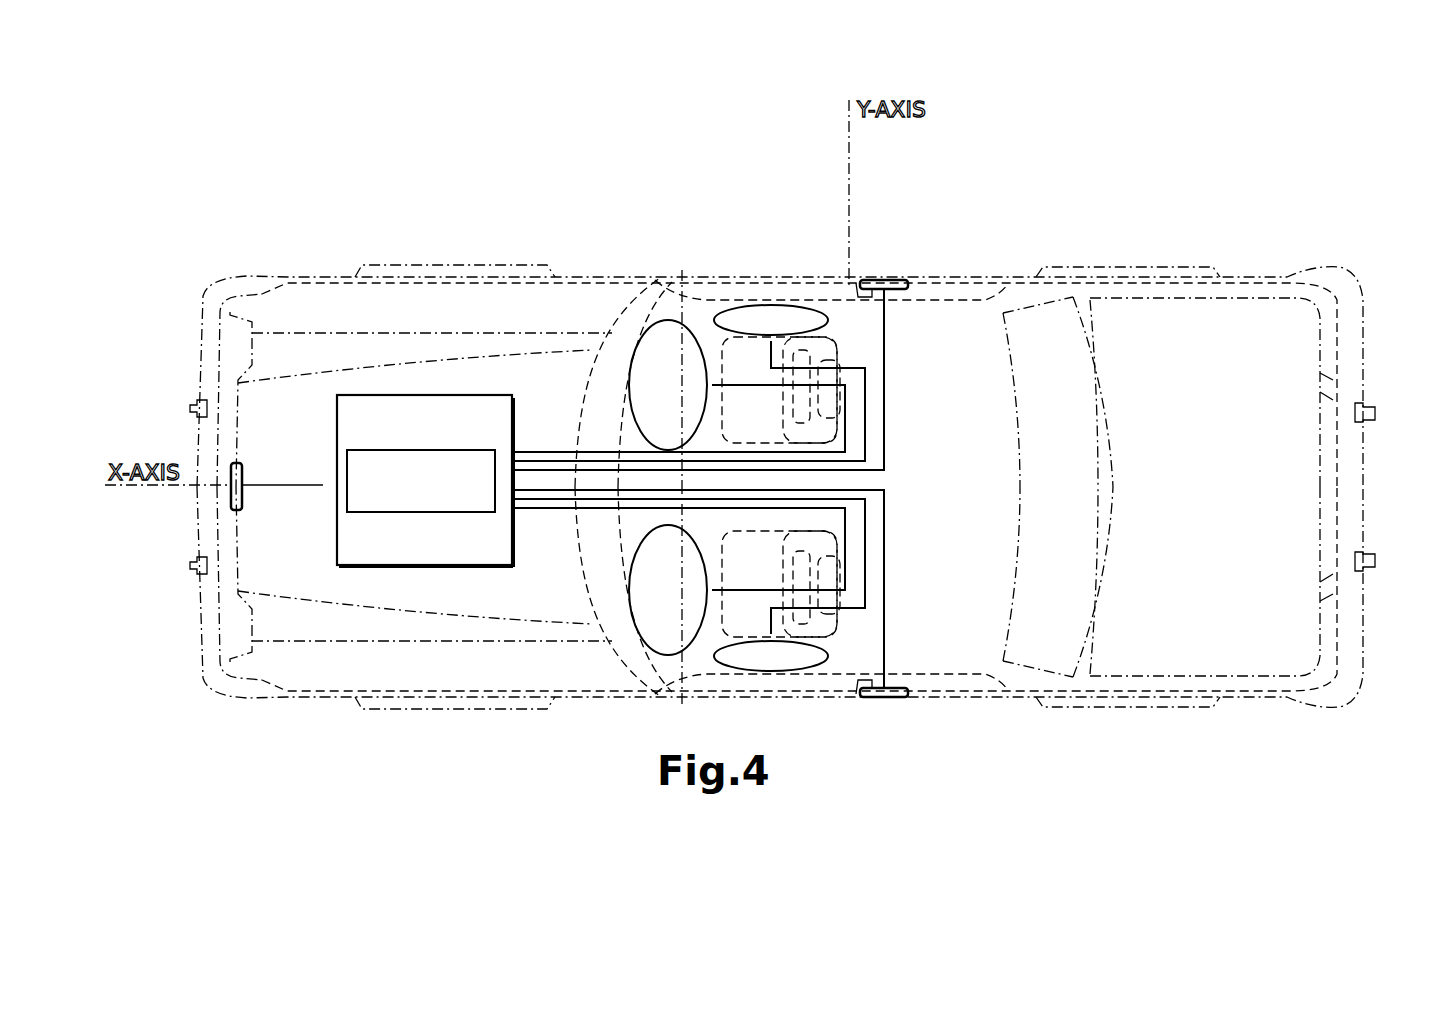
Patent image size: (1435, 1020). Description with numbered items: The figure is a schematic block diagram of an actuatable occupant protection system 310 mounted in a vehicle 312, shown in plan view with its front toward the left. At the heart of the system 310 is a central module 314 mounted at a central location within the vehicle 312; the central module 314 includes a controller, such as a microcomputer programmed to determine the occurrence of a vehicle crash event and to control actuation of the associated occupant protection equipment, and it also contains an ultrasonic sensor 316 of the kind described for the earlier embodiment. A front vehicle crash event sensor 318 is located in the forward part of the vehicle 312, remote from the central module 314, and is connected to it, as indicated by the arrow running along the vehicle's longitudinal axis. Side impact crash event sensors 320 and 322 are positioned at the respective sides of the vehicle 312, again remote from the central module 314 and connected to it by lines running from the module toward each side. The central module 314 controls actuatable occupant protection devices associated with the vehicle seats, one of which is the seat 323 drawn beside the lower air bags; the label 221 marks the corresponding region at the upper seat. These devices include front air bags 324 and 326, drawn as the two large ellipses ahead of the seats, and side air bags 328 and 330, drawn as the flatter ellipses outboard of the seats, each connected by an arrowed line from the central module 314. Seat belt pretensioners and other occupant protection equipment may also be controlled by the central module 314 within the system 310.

The actuatable occupant protection system 310 is at (920, 330).
The vehicle 312 is at (1330, 259).
The central module 314 is at (503, 533).
The ultrasonic sensor 316 is at (353, 490).
The front vehicle crash event sensor 318 is at (243, 474).
The side impact crash event sensor 320 is at (890, 697).
The side impact crash event sensor 322 is at (892, 278).
The front air bag 324 is at (667, 618).
The front air bag 326 is at (665, 352).
The side air bag 328 is at (783, 659).
The side air bag 330 is at (768, 320).
The left seat 221 is at (827, 357).
The vehicle seat 323 is at (823, 627).